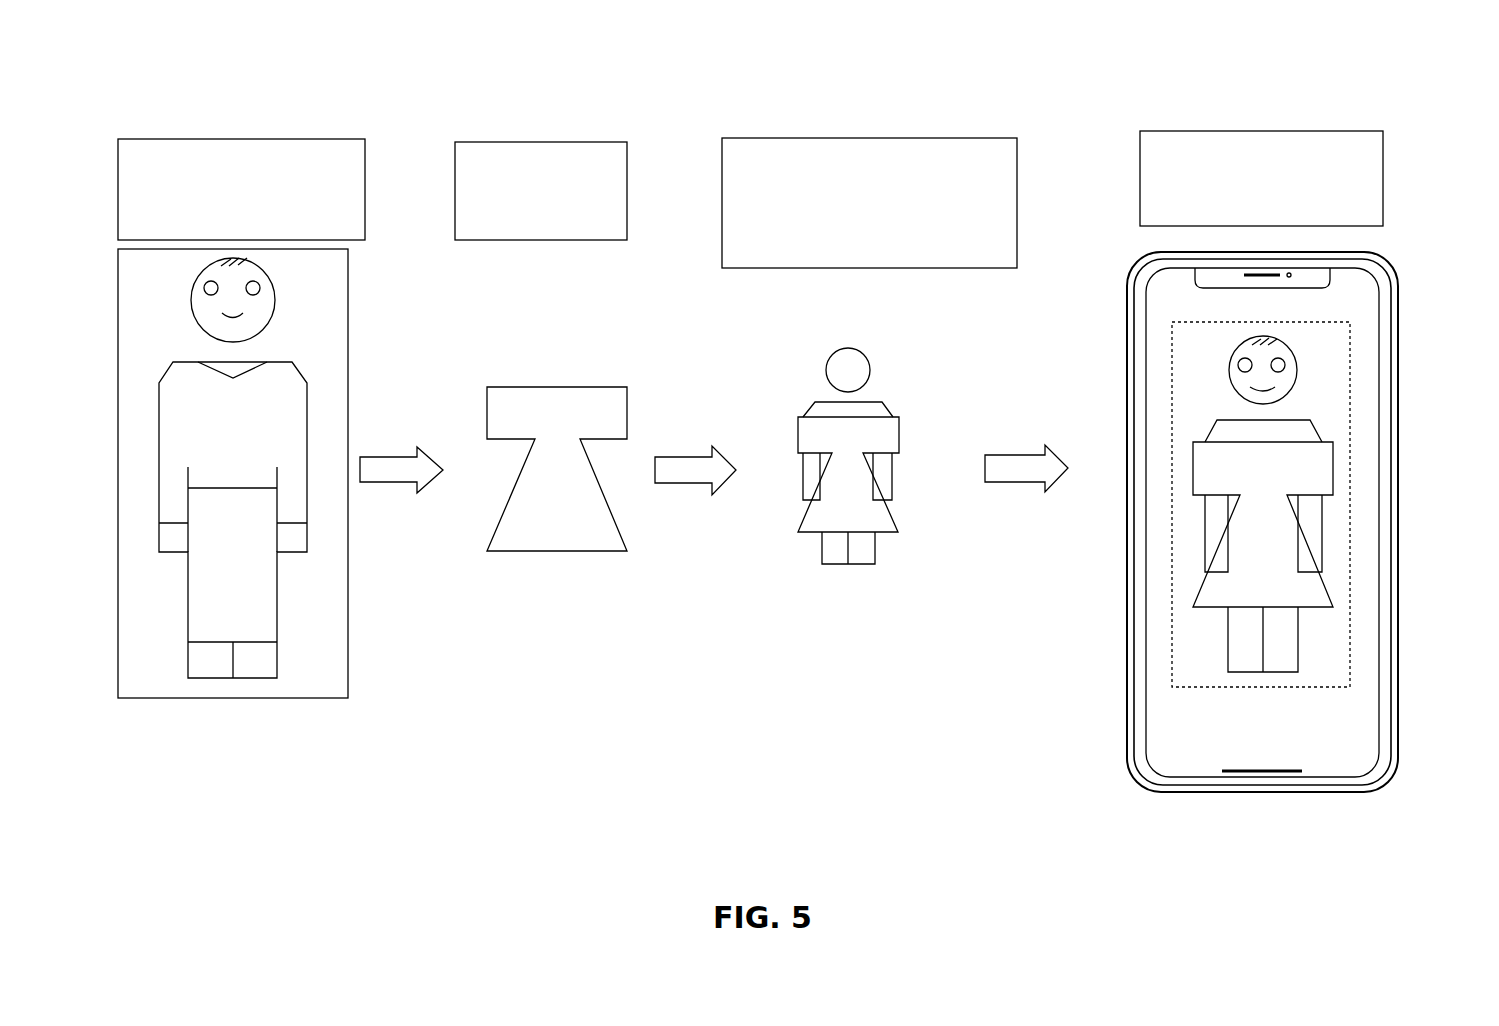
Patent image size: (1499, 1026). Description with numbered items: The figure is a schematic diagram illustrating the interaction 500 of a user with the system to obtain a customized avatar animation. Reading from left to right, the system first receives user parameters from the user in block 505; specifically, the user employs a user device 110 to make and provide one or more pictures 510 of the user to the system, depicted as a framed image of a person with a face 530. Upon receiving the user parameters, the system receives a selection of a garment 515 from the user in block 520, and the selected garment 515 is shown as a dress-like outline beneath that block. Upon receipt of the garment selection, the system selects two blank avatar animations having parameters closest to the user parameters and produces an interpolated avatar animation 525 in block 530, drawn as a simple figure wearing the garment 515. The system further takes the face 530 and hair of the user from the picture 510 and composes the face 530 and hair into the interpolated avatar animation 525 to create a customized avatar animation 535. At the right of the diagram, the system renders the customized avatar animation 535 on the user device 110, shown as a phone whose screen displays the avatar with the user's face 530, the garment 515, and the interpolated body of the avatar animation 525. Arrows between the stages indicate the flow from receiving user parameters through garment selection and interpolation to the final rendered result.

The interaction 500 is at (1263, 52).
The block 505 is at (348, 153).
The picture 510 is at (322, 300).
The garment 515 is at (614, 412).
The block 520 is at (606, 155).
The interpolated avatar animation 525 is at (870, 407).
The block 530 is at (1005, 165).
The customized avatar animation 535 is at (1350, 400).
The user device 110 is at (1148, 718).